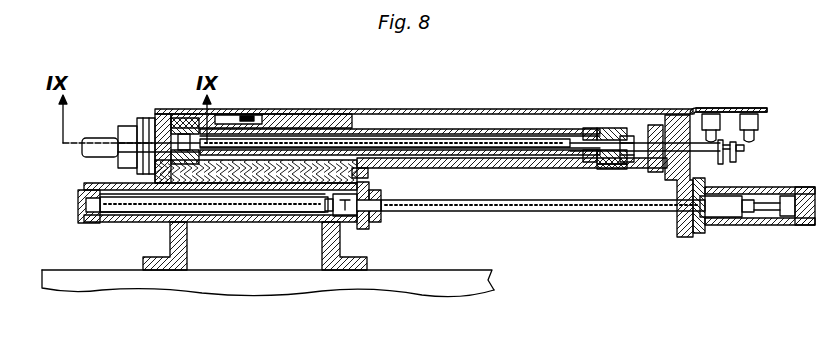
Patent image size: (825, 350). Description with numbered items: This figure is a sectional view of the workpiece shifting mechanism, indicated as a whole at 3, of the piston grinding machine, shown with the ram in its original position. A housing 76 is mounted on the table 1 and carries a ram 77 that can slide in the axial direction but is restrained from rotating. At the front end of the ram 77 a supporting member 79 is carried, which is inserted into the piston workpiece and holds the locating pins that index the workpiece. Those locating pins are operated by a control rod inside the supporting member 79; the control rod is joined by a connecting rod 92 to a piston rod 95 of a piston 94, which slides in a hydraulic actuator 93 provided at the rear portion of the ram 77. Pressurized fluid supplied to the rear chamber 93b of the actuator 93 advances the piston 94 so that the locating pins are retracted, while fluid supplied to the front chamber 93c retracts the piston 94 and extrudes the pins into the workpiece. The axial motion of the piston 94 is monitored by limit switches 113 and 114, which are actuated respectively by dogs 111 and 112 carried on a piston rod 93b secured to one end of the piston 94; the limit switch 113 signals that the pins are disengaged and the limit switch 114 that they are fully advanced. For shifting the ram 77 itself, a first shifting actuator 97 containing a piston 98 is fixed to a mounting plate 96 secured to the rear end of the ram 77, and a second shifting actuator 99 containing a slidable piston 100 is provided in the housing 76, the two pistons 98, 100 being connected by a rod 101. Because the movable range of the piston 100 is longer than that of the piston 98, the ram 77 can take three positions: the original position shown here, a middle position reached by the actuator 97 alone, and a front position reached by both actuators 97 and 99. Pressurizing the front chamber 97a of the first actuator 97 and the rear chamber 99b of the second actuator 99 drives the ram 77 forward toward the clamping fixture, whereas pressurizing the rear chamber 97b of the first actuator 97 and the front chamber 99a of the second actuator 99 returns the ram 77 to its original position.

The table 1 is at (446, 270).
The spindle head assembly 3 is at (243, 104).
The housing 76 is at (330, 118).
The ram 77 is at (278, 129).
The supporting member 79 is at (106, 141).
The connecting rod 92 is at (418, 140).
The hydraulic actuator 93 is at (620, 128).
The piston rod 93b is at (652, 125).
The front chamber 93c is at (603, 168).
The piston 94 is at (626, 162).
The piston rod 95 is at (586, 128).
The mounting plate 96 is at (680, 176).
The first shifting actuator 97 is at (782, 226).
The front chamber 97a is at (700, 235).
The rear chamber 97b is at (778, 194).
The piston 98 is at (731, 224).
The second shifting actuator 99 is at (233, 222).
The front chamber 99a is at (110, 222).
The rear chamber 99b is at (374, 224).
The piston 100 is at (314, 222).
The rod 101 is at (540, 212).
The dog 111 is at (721, 162).
The dog 112 is at (740, 160).
The limit switch 113 is at (710, 113).
The limit switch 114 is at (750, 113).